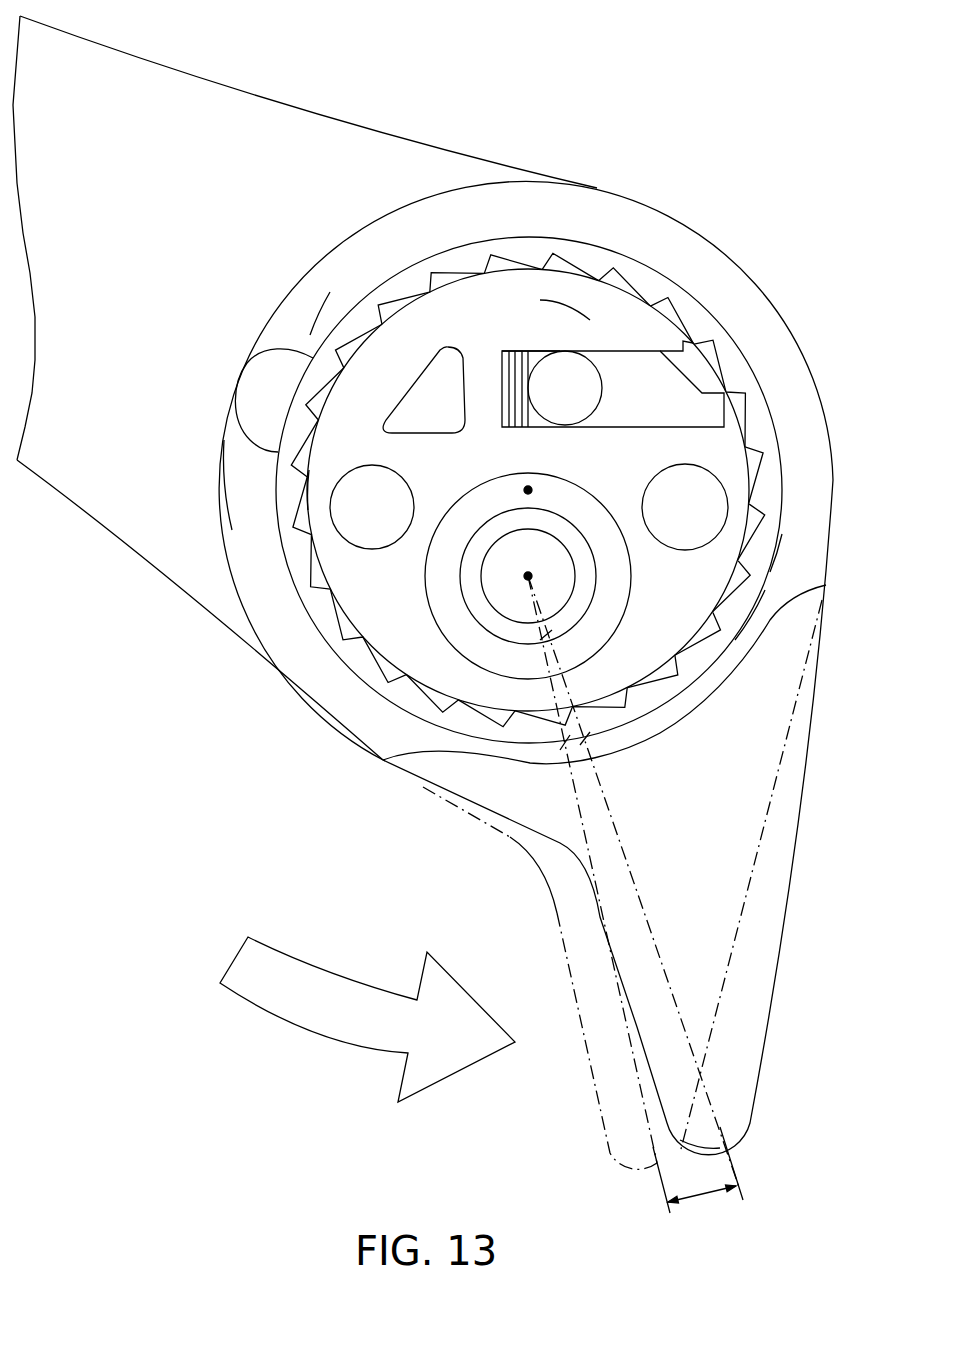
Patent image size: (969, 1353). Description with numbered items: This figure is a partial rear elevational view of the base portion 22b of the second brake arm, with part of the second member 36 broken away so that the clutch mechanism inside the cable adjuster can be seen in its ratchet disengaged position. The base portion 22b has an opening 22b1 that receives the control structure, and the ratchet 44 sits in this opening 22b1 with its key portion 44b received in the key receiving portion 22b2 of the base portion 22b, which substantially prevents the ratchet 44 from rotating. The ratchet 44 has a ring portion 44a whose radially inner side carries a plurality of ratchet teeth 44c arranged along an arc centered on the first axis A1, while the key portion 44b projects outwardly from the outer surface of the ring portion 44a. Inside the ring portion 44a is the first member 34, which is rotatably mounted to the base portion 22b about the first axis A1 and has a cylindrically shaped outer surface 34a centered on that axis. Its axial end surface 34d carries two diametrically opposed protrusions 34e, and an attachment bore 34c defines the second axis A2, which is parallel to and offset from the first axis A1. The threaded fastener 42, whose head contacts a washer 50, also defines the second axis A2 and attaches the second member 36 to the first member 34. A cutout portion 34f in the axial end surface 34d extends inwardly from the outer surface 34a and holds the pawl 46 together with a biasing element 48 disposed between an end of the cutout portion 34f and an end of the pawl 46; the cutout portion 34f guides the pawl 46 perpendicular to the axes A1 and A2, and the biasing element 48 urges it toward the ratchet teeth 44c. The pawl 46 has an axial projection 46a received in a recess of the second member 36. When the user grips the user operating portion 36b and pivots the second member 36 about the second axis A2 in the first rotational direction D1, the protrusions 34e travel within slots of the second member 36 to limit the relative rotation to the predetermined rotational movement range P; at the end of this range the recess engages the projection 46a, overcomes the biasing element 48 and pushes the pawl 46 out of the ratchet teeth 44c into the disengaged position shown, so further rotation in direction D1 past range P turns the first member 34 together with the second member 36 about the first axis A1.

The base portion 22b is at (187, 72).
The opening 22b1 is at (347, 310).
The key receiving portion 22b2 is at (267, 350).
The first member 34 is at (630, 287).
The cylindrically shaped outer surface 34a is at (303, 510).
The attachment bore 34c is at (432, 562).
The axial end surface 34d is at (565, 315).
The protrusion 34e is at (360, 493).
The cutout portion 34f is at (530, 350).
The second member 36 is at (780, 1022).
The user operating portion 36b is at (727, 1080).
The threaded fastener 42 is at (527, 603).
The ratchet 44 is at (782, 427).
The ring portion 44a is at (747, 620).
The key portion 44b is at (232, 417).
The ratchet teeth 44c is at (773, 552).
The pawl 46 is at (645, 388).
The projection 46a is at (570, 382).
The biasing element 48 is at (500, 377).
The washer 50 is at (467, 637).
The first axis A1 is at (528, 490).
The second axis A2 is at (528, 576).
The first rotational direction D1 is at (290, 1020).
The predetermined rotational movement range P is at (703, 1197).